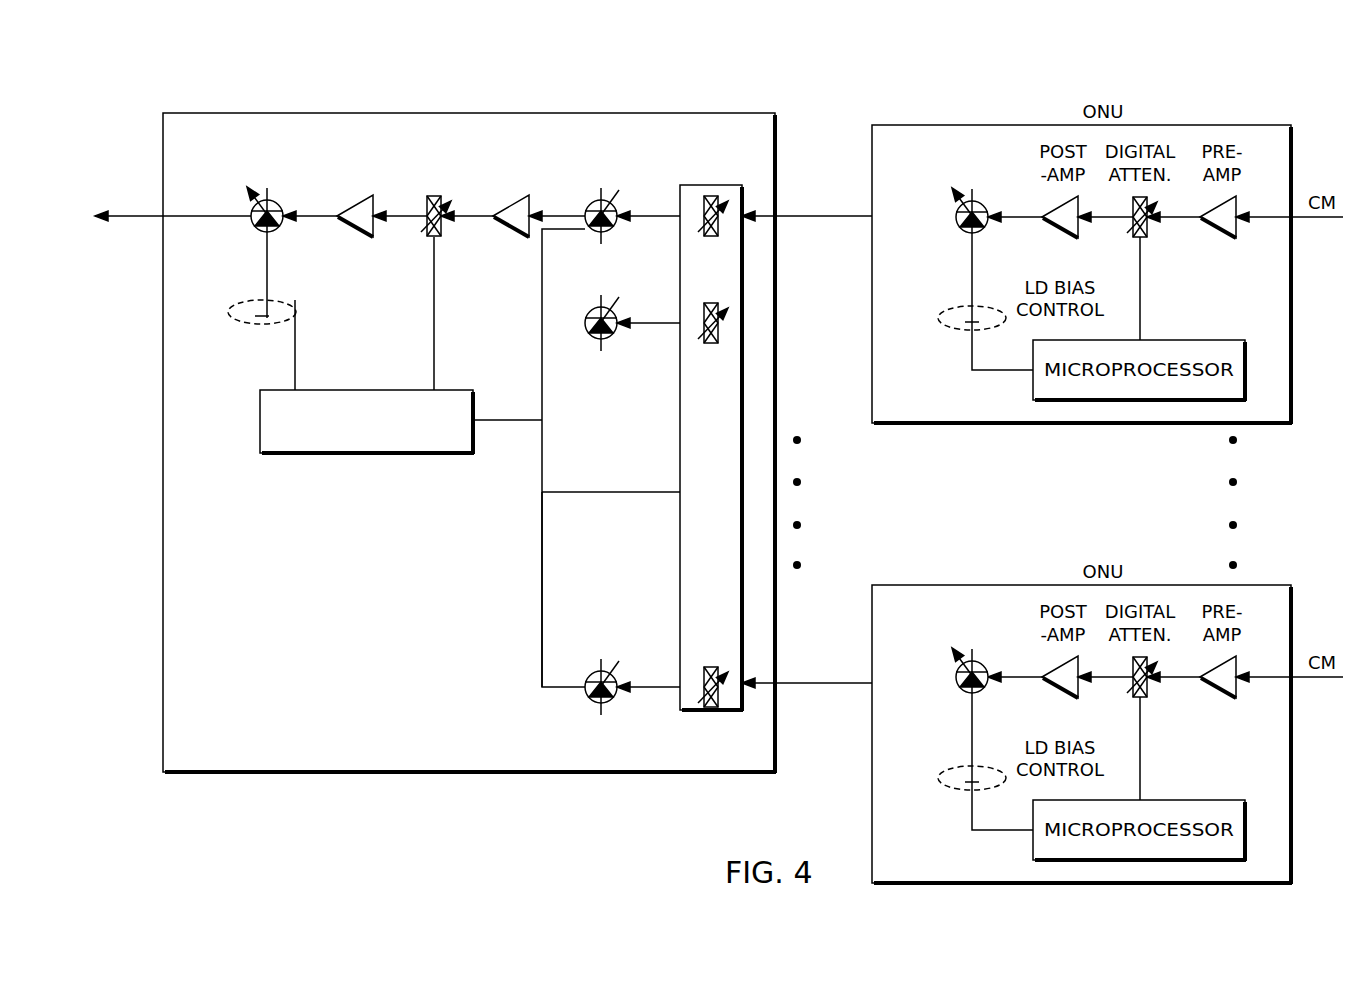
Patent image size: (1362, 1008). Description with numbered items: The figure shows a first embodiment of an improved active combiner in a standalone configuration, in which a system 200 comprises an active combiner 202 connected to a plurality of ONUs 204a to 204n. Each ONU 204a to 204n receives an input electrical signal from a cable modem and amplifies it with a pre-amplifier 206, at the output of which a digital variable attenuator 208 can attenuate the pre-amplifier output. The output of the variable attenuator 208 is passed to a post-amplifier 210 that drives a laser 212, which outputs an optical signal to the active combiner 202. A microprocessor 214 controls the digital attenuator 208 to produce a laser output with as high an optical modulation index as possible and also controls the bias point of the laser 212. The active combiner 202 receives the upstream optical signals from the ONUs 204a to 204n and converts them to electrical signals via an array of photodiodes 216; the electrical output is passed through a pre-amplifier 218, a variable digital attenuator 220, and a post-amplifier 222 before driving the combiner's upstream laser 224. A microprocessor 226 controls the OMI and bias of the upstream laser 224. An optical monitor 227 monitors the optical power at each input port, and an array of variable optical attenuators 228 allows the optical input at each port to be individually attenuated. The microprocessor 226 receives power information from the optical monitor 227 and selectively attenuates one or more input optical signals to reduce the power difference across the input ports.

The system 200 is at (168, 68).
The active combiner 202 is at (470, 113).
The ONU 204a is at (940, 125).
The ONU 204n is at (940, 585).
The pre-amplifier 206 is at (1215, 235).
The digital variable attenuator 208 is at (1130, 238).
The post-amplifier 210 is at (1056, 234).
The laser 212 is at (955, 218).
The microprocessor 214 is at (1190, 340).
The array of photodiodes 216 is at (600, 200).
The pre-amplifier 218 is at (512, 237).
The variable digital attenuator 220 is at (427, 235).
The post-amplifier 222 is at (353, 231).
The upstream laser 224 is at (251, 217).
The microprocessor 226 is at (364, 455).
The optical monitor 227 is at (382, 531).
The array of variable optical attenuators 228 is at (708, 185).